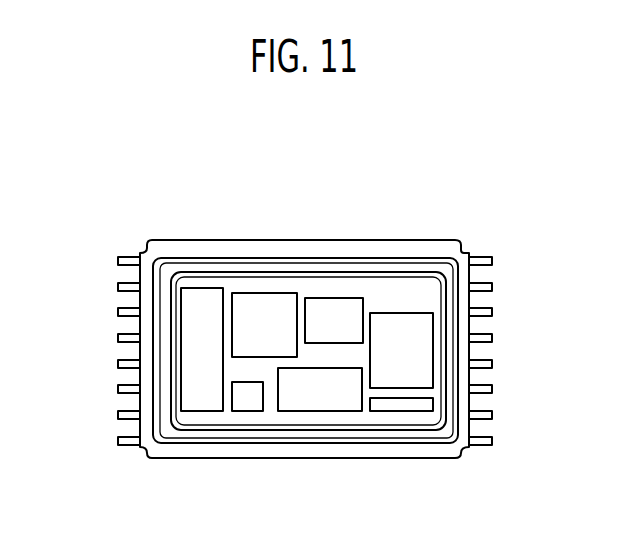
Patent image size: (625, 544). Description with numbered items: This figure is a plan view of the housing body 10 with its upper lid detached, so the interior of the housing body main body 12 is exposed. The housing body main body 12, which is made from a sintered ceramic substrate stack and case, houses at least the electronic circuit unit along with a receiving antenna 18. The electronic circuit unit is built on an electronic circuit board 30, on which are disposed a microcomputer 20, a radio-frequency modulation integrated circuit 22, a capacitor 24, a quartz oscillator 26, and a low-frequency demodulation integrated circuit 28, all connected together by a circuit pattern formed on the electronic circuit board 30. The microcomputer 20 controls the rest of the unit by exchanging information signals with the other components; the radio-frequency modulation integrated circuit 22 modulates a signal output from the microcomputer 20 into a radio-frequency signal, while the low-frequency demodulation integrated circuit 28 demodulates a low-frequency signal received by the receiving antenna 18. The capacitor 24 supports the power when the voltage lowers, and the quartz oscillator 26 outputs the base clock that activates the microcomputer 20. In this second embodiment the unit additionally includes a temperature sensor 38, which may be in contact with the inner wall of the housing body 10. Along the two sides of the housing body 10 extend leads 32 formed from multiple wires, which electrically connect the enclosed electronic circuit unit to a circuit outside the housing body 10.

The housing body 10 is at (469, 186).
The housing body main body 12 is at (202, 240).
The receiving antenna 18 is at (181, 374).
The microcomputer 20 is at (260, 293).
The radio-frequency modulation integrated circuit 22 is at (330, 298).
The capacitor 24 is at (433, 365).
The quartz oscillator 26 is at (320, 413).
The low-frequency demodulation integrated circuit 28 is at (247, 413).
The electronic circuit board 30 is at (394, 290).
The leads 32 is at (108, 254).
The temperature sensor 38 is at (403, 413).